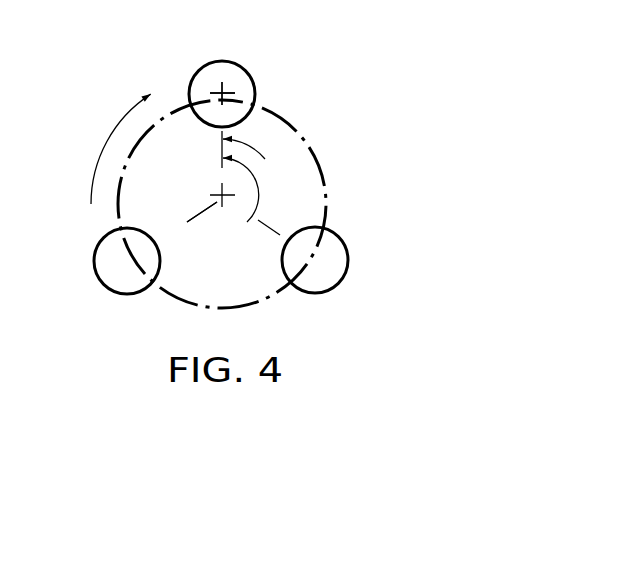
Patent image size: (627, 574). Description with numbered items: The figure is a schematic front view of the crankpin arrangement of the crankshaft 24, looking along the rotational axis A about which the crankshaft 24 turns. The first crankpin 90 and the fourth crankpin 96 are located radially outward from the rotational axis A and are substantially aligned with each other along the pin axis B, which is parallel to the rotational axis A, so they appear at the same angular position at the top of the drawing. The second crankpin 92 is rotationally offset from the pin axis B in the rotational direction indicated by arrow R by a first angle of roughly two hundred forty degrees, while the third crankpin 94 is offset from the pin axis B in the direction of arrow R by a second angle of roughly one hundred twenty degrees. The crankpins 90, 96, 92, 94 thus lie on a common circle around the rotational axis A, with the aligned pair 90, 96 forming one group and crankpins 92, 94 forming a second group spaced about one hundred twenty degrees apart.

The crankshaft 24 is at (366, 182).
The first crankpin 90 is at (193, 74).
The fourth crankpin 96 is at (222, 61).
The second crankpin 92 is at (94, 262).
The third crankpin 94 is at (348, 259).
The rotational axis A is at (220, 192).
The pin axis B is at (226, 92).
The arrow indicating rotational direction R is at (103, 146).